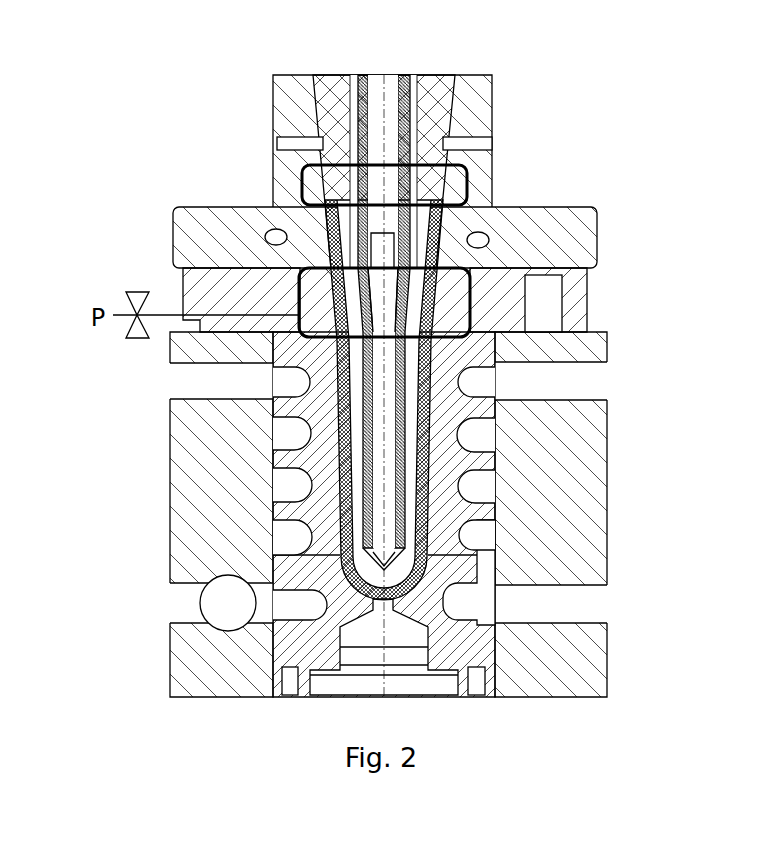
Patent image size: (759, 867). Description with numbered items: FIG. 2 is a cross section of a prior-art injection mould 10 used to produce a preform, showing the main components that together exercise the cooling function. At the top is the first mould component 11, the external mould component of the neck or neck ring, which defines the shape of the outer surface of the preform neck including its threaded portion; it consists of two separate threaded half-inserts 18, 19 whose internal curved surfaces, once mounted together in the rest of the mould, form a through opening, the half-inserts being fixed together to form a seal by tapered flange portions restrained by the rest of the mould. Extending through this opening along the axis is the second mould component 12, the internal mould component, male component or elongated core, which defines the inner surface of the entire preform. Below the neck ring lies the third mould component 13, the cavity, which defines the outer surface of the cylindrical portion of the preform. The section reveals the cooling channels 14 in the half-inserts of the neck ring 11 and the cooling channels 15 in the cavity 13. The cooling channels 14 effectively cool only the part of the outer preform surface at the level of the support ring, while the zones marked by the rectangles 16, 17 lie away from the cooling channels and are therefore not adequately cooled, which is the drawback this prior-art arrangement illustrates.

The injection mould 10 is at (612, 140).
The first mould component 11 is at (463, 217).
The second mould component 12 is at (425, 247).
The third mould component 13 is at (445, 408).
The cooling channels 14 is at (282, 233).
The cooling channels 15 is at (285, 378).
The rectangle 16 is at (302, 195).
The rectangle 17 is at (300, 270).
The threaded half-insert 18 is at (180, 228).
The threaded half-insert 19 is at (587, 245).